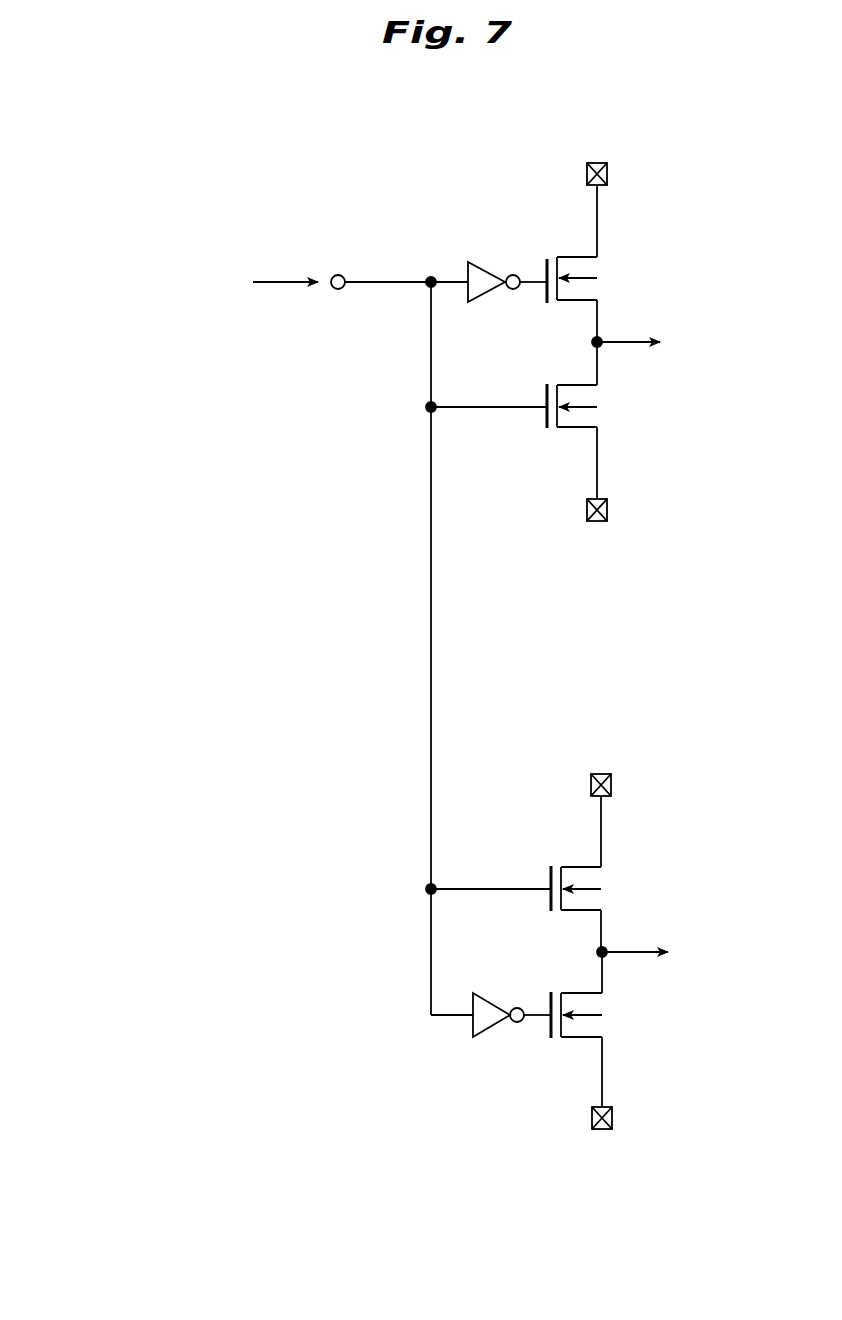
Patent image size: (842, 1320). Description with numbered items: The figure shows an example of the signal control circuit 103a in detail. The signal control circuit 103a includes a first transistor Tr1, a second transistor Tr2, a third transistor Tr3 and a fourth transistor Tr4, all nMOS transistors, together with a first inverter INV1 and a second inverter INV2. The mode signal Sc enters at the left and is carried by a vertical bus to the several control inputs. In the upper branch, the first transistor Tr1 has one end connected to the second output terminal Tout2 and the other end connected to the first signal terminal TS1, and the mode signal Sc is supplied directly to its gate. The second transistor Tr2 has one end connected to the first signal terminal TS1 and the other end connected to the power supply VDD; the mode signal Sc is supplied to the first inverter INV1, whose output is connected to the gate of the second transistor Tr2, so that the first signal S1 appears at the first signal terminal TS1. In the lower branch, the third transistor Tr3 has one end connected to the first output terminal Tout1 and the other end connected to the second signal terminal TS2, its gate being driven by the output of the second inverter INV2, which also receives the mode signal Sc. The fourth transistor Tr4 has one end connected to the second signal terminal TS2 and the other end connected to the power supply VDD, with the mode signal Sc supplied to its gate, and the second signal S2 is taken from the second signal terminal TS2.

The signal control circuit 103a is at (335, 577).
The first inverter INV1 is at (492, 262).
The second inverter INV2 is at (495, 996).
The first transistor Tr1 is at (578, 428).
The second transistor Tr2 is at (577, 258).
The third transistor Tr3 is at (582, 1037).
The fourth transistor Tr4 is at (581, 867).
The first signal terminal TS1 is at (599, 341).
The second signal terminal TS2 is at (603, 951).
The first signal S1 is at (650, 344).
The second signal S2 is at (654, 954).
The mode signal Sc is at (318, 283).
The first output terminal Tout1 is at (612, 1118).
The second output terminal Tout2 is at (607, 510).
The power supply VDD is at (598, 497).